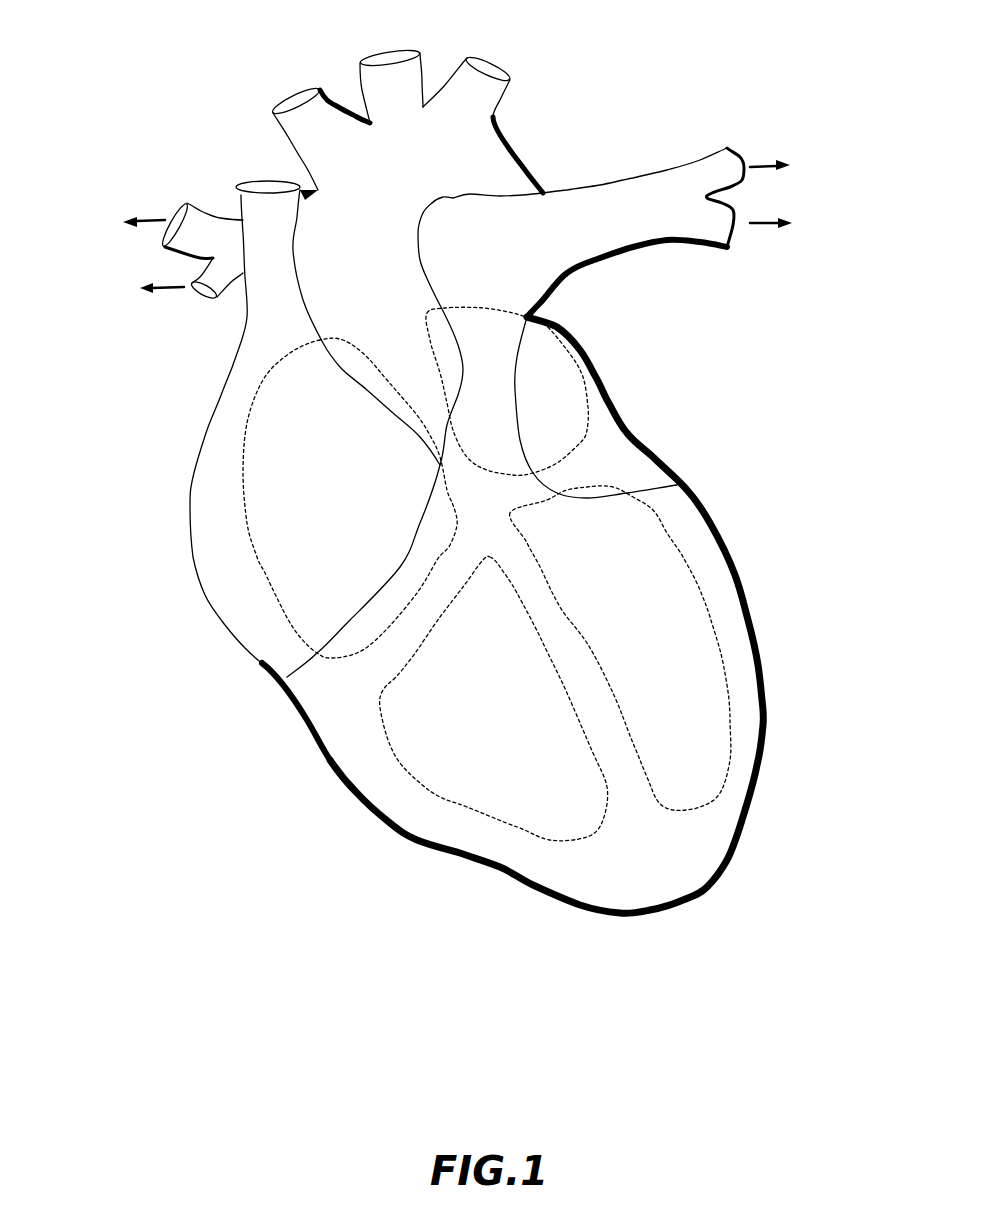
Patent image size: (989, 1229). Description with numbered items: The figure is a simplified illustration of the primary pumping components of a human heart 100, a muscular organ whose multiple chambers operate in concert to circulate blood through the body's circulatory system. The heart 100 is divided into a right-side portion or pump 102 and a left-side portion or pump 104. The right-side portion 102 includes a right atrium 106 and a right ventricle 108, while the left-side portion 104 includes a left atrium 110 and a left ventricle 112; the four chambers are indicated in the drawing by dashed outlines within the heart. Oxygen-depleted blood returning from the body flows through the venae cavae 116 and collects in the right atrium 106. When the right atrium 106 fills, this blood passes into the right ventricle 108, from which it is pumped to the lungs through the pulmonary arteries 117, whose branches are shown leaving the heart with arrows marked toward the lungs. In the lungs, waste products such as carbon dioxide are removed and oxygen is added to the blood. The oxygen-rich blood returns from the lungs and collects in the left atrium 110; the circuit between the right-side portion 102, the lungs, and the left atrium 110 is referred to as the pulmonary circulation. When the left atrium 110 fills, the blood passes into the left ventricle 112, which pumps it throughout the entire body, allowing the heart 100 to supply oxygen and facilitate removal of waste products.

The heart 100 is at (244, 50).
The right-side portion 102 is at (252, 696).
The left-side portion 104 is at (770, 576).
The right atrium 106 is at (263, 578).
The right ventricle 108 is at (440, 797).
The left atrium 110 is at (583, 432).
The left ventricle 112 is at (733, 720).
The venae cavae 116 is at (267, 182).
The pulmonary arteries 117 is at (207, 300).